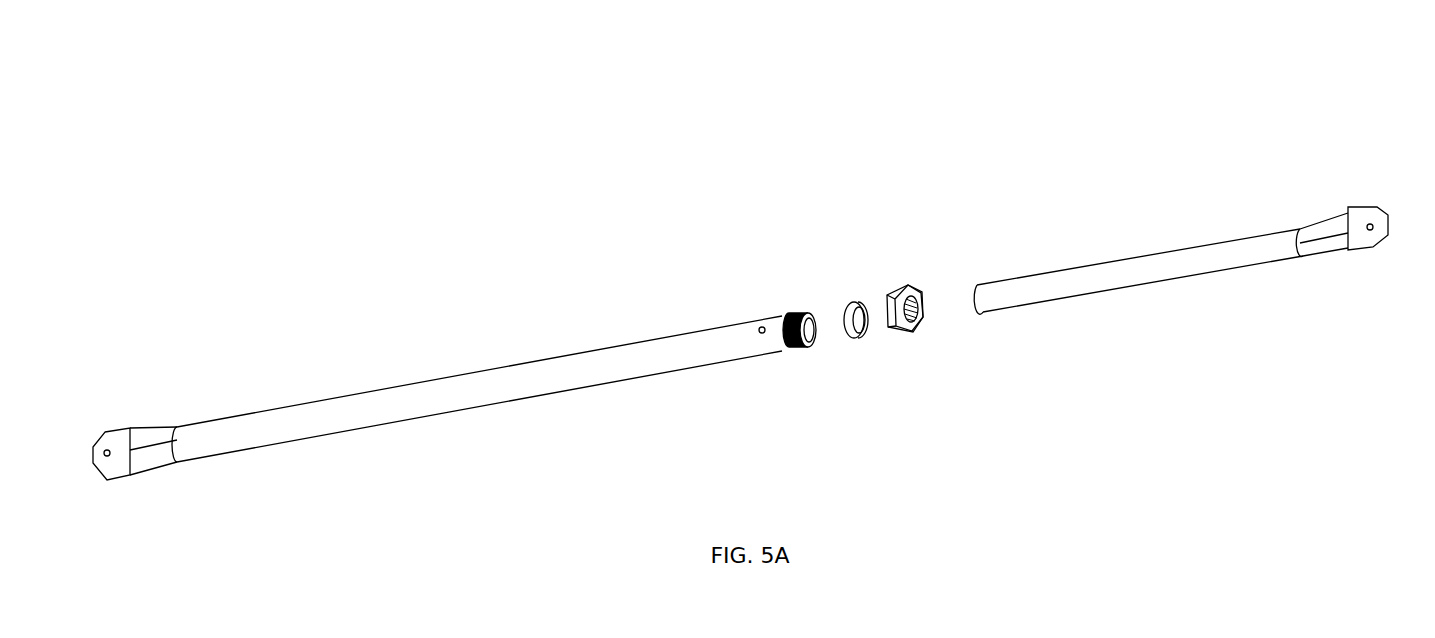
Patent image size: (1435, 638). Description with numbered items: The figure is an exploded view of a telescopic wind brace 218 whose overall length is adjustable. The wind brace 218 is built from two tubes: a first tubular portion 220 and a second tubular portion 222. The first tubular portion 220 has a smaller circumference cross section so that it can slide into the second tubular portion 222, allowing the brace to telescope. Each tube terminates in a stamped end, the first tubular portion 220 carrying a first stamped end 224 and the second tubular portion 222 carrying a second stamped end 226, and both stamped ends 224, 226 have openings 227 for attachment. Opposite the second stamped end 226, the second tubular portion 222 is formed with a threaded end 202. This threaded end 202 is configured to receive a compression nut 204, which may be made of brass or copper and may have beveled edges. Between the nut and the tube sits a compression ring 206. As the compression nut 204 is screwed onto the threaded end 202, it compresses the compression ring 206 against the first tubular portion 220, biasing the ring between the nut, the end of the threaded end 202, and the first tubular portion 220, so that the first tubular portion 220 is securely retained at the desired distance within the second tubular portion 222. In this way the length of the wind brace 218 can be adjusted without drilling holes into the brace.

The wind brace 218 is at (670, 300).
The second tubular portion 222 is at (513, 380).
The second stamped end 226 is at (123, 437).
The openings 227 is at (108, 457).
The threaded end 202 is at (790, 315).
The compression ring 206 is at (852, 305).
The compression nut 204 is at (895, 298).
The first tubular portion 220 is at (1122, 270).
The first stamped end 224 is at (1360, 213).